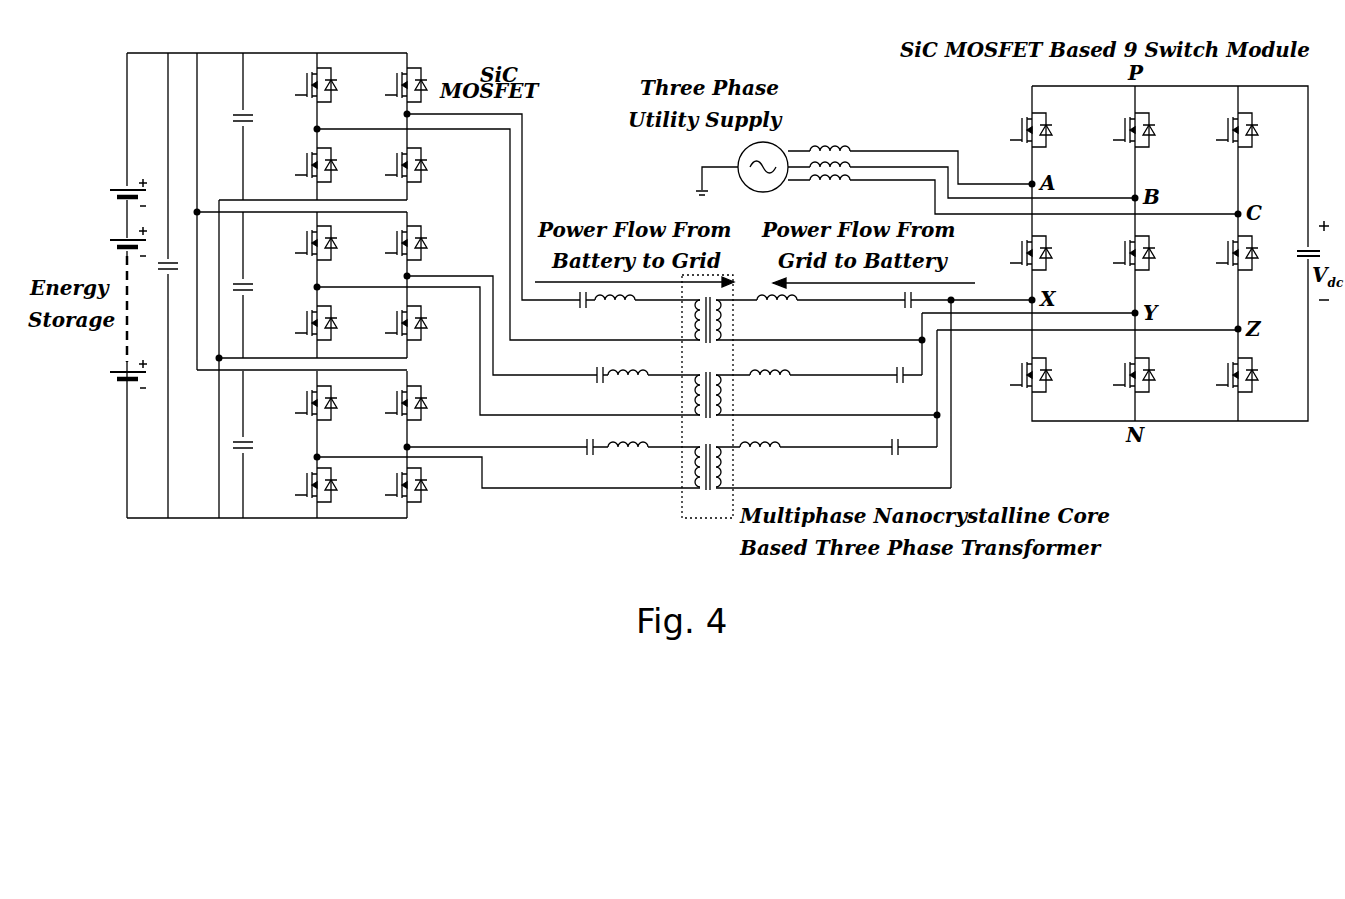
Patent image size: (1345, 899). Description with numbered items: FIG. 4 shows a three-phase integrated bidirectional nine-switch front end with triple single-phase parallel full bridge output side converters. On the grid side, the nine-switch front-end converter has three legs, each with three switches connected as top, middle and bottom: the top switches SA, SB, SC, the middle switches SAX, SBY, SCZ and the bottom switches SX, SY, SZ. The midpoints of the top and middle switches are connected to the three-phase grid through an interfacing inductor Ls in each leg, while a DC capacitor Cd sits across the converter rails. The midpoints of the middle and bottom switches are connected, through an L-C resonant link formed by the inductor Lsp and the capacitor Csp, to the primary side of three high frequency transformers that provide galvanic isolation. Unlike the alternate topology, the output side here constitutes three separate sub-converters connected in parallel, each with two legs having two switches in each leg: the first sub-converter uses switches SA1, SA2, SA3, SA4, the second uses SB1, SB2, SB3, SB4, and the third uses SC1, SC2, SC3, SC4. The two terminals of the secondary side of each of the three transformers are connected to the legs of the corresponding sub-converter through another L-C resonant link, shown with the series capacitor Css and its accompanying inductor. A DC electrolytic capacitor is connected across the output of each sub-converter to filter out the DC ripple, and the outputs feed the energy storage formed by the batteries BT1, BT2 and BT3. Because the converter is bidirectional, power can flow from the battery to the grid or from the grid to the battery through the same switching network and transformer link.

The battery 1 BT1 is at (97, 196).
The battery 2 BT2 is at (97, 244).
The battery 3 BT3 is at (97, 376).
The SiC MOSFET switch SA1 is at (390, 85).
The SiC MOSFET switch SA2 is at (390, 165).
The SiC MOSFET switch SA3 is at (299, 85).
The SiC MOSFET switch SA4 is at (299, 165).
The SiC MOSFET switch SB1 is at (390, 243).
The SiC MOSFET switch SB2 is at (390, 323).
The SiC MOSFET switch SB3 is at (299, 243).
The SiC MOSFET switch SB4 is at (299, 323).
The SiC MOSFET switch SC1 is at (390, 403).
The SiC MOSFET switch SC2 is at (390, 485).
The SiC MOSFET switch SC3 is at (299, 403).
The SiC MOSFET switch SC4 is at (299, 485).
The secondary side series capacitors Css is at (604, 387).
The primary side series inductors Lsp is at (773, 371).
The primary side series capacitors Csp is at (891, 373).
The grid side inductors Ls is at (1013, 167).
The nine-switch module switch SA is at (1015, 130).
The nine-switch module switch SB is at (1118, 130).
The nine-switch module switch SC is at (1221, 130).
The nine-switch module switch SAX is at (1011, 253).
The nine-switch module switch SBY is at (1114, 253).
The nine-switch module switch SCZ is at (1217, 253).
The nine-switch module switch SX is at (1015, 375).
The nine-switch module switch SY is at (1118, 375).
The nine-switch module switch SZ is at (1221, 375).
The DC link capacitor Cd is at (1298, 264).